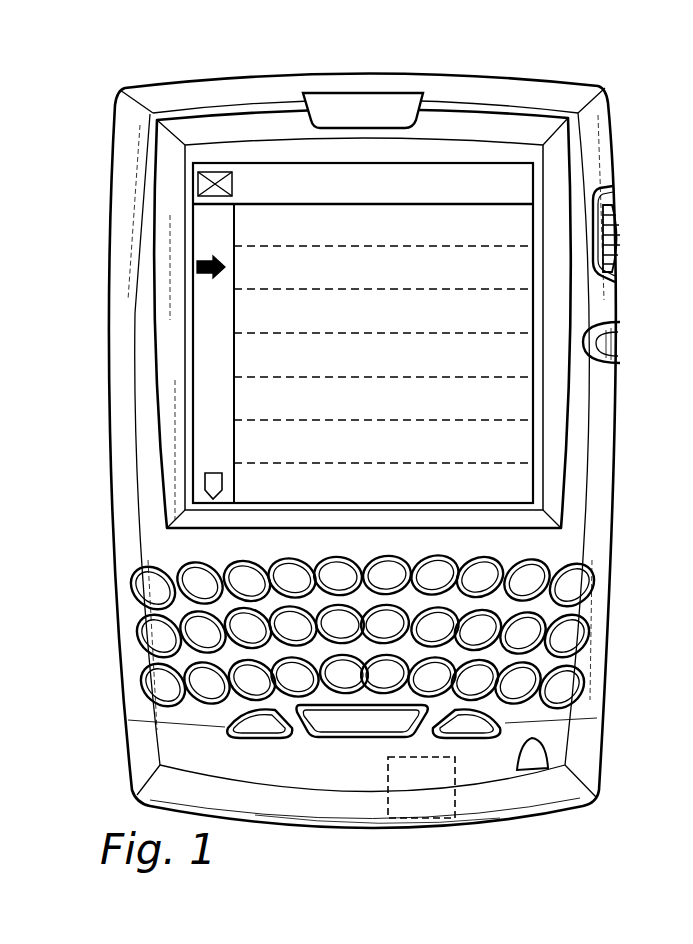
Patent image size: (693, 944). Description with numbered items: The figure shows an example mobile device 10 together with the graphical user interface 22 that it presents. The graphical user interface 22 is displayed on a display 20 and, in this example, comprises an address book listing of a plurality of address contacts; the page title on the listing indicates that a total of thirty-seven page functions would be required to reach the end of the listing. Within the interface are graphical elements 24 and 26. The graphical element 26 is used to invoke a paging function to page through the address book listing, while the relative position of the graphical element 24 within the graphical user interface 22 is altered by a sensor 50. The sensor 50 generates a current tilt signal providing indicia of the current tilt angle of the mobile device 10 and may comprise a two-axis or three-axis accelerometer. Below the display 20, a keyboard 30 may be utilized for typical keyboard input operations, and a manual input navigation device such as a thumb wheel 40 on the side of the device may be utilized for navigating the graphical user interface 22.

The mobile device 10 is at (624, 97).
The display 20 is at (447, 163).
The graphical user interface 22 is at (500, 358).
The graphical element 24 is at (210, 278).
The graphical element 26 is at (203, 487).
The keyboard 30 is at (588, 608).
The thumb wheel 40 is at (648, 280).
The sensor 50 is at (455, 773).